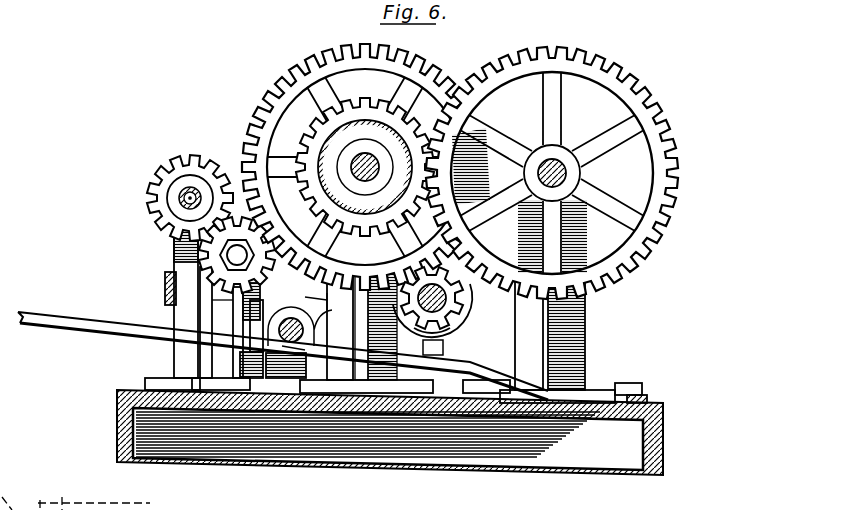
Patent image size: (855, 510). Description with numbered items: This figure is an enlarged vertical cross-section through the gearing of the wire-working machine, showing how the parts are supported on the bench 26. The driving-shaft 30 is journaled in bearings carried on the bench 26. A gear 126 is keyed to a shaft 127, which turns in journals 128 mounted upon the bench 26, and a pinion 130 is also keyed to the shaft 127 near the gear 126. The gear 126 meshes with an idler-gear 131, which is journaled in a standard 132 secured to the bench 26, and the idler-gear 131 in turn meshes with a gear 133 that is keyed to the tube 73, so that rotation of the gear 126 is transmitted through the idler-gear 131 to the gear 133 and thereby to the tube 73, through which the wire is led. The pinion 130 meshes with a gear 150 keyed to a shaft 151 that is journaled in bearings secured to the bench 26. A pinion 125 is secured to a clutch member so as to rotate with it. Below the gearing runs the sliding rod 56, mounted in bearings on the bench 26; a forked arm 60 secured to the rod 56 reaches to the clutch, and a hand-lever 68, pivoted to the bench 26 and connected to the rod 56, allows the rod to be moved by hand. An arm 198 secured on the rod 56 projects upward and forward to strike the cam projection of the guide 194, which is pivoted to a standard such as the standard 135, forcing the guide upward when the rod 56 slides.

The bench or table 26 is at (663, 426).
The driving-shaft 30 is at (466, 307).
The sliding rod 56 is at (288, 345).
The forked arm 60 is at (328, 293).
The hand-lever 68 is at (36, 320).
The tube 73 is at (182, 200).
The pinion 125 is at (448, 332).
The gear 126 is at (309, 75).
The shaft 127 is at (367, 184).
The journals 128 is at (340, 372).
The pinion 130 is at (365, 167).
The idler-gear 131 is at (296, 290).
The standard 132 is at (227, 315).
The gear 133 is at (194, 166).
The standard 135 is at (237, 255).
The gear 150 is at (678, 183).
The shaft 151 is at (580, 177).
The guide 194 is at (172, 290).
The arm 198 is at (291, 343).